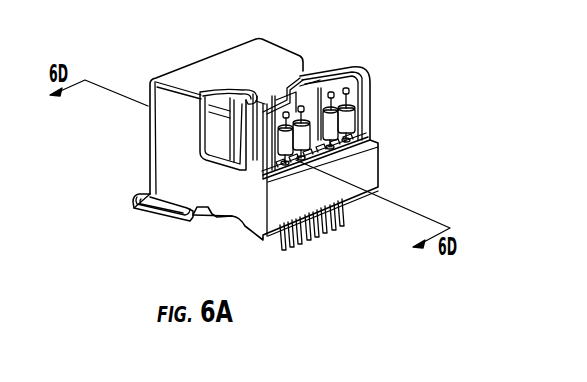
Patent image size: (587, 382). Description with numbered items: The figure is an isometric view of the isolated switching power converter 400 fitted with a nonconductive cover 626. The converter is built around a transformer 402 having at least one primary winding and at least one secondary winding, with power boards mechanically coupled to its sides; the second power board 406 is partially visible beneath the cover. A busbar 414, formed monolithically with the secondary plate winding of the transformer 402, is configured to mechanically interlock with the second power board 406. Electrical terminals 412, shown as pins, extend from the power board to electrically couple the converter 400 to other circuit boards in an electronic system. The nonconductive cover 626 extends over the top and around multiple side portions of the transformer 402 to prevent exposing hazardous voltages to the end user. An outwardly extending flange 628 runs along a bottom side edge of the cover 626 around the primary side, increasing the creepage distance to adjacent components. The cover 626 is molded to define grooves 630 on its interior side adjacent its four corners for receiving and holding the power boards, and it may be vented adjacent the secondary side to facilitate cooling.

The isolated switching power converter 400 is at (368, 57).
The transformer 402 is at (228, 147).
The second power board 406 is at (350, 142).
The electrical terminals 412 is at (343, 222).
The busbar 414 is at (322, 80).
The nonconductive cover 626 is at (167, 133).
The outwardly extending flange 628 is at (160, 220).
The grooves 630 is at (370, 108).